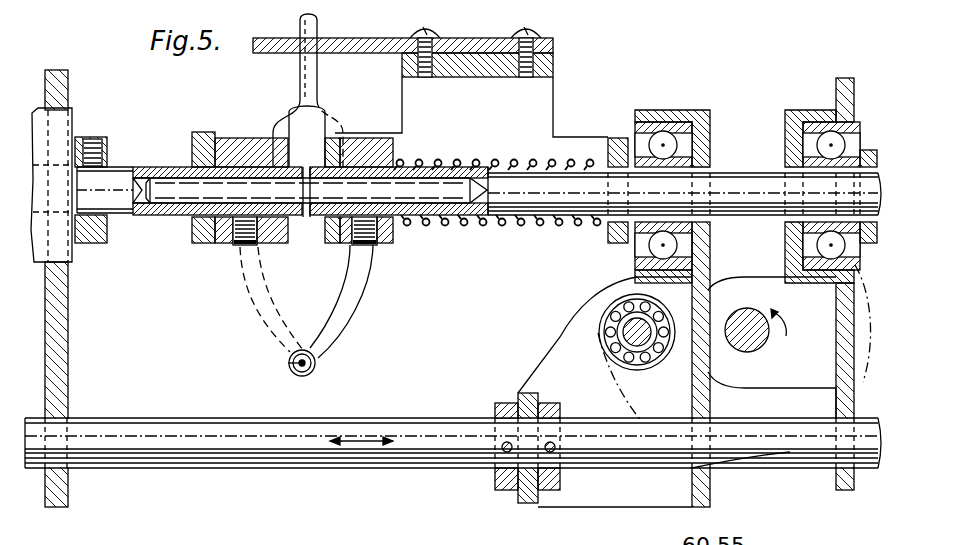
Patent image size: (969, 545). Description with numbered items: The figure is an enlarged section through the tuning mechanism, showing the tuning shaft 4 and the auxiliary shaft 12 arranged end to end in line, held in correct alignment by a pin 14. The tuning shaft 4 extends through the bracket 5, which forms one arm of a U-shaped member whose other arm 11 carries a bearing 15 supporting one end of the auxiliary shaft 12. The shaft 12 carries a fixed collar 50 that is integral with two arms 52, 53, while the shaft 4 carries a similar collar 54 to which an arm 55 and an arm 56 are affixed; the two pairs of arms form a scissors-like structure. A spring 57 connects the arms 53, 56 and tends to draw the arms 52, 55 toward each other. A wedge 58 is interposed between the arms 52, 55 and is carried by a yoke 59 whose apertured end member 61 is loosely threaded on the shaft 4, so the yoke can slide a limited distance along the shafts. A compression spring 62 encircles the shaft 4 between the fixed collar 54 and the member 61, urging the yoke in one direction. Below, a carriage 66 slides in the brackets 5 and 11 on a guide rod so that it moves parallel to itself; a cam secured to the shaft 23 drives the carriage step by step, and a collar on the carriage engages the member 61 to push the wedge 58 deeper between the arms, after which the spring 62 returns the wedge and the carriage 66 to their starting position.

The tuning shaft 4 is at (408, 165).
The bracket 5 is at (843, 78).
The arm 11 is at (62, 343).
The auxiliary shaft 12 is at (118, 175).
The pin 14 is at (433, 192).
The bearing 15 is at (68, 118).
The shaft 23 is at (770, 345).
The collar 50 is at (234, 136).
The arm 52 is at (278, 115).
The arm 53 is at (250, 328).
The collar 54 is at (393, 145).
The arm 55 is at (342, 118).
The arm 56 is at (352, 312).
The spring 57 is at (316, 370).
The wedge 58 is at (345, 48).
The yoke 59 is at (547, 97).
The end member 61 is at (615, 136).
The compression spring 62 is at (533, 160).
The carriage 66 is at (597, 492).